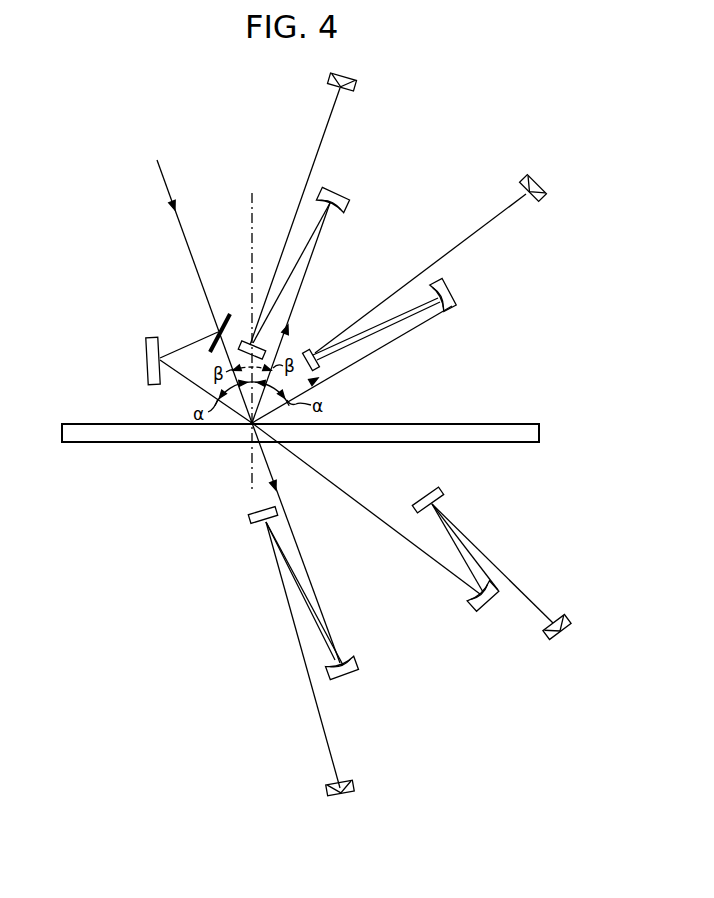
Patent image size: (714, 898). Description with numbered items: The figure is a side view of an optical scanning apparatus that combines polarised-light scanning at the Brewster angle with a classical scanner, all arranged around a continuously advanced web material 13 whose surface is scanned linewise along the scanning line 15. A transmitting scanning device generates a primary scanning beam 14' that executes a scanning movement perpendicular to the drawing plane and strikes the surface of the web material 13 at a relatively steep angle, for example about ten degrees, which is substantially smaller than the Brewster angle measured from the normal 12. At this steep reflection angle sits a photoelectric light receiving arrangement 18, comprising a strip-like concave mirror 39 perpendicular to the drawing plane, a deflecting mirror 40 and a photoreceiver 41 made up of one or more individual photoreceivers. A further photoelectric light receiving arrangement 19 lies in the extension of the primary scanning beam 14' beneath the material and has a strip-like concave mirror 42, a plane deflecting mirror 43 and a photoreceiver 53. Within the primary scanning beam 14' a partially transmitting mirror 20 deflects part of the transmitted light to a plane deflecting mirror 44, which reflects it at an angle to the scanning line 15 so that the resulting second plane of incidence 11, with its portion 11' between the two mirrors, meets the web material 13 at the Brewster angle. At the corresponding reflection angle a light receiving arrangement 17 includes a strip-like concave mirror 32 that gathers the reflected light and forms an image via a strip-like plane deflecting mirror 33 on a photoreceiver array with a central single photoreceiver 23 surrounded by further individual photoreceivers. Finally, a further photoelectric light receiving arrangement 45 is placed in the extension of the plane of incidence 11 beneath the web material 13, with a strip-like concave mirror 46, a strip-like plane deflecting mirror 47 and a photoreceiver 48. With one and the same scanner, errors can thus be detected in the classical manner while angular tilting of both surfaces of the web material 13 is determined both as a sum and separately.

The plane of incidence 11 is at (206, 391).
The plane of incidence 11' is at (193, 354).
The normal 12 is at (250, 208).
The web material 13 is at (96, 442).
The primary scanning beam 14' is at (194, 291).
The scanning line 15 is at (250, 428).
The light receiving arrangement 17 is at (373, 350).
The photoelectric light receiving arrangement 18 is at (320, 242).
The photoelectric light receiving arrangement 19 is at (302, 624).
The partially transmitting mirror 20 is at (225, 318).
The central single photoreceiver 23 is at (526, 182).
The strip-like concave mirror 32 is at (456, 293).
The strip-like plane deflecting mirror 33 is at (310, 348).
The strip-like concave mirror 39 is at (351, 200).
The deflecting mirror 40 is at (250, 344).
The photoreceiver 41 is at (355, 84).
The strip-like concave mirror 42 is at (356, 676).
The plane deflecting mirror 43 is at (250, 520).
The plane deflecting mirror 44 is at (148, 364).
The photoelectric light receiving arrangement 45 is at (428, 533).
The strip-like concave mirror 46 is at (486, 604).
The strip-like plane deflecting mirror 47 is at (438, 494).
The photoreceiver 48 is at (567, 620).
The photoreceiver 53 is at (347, 794).